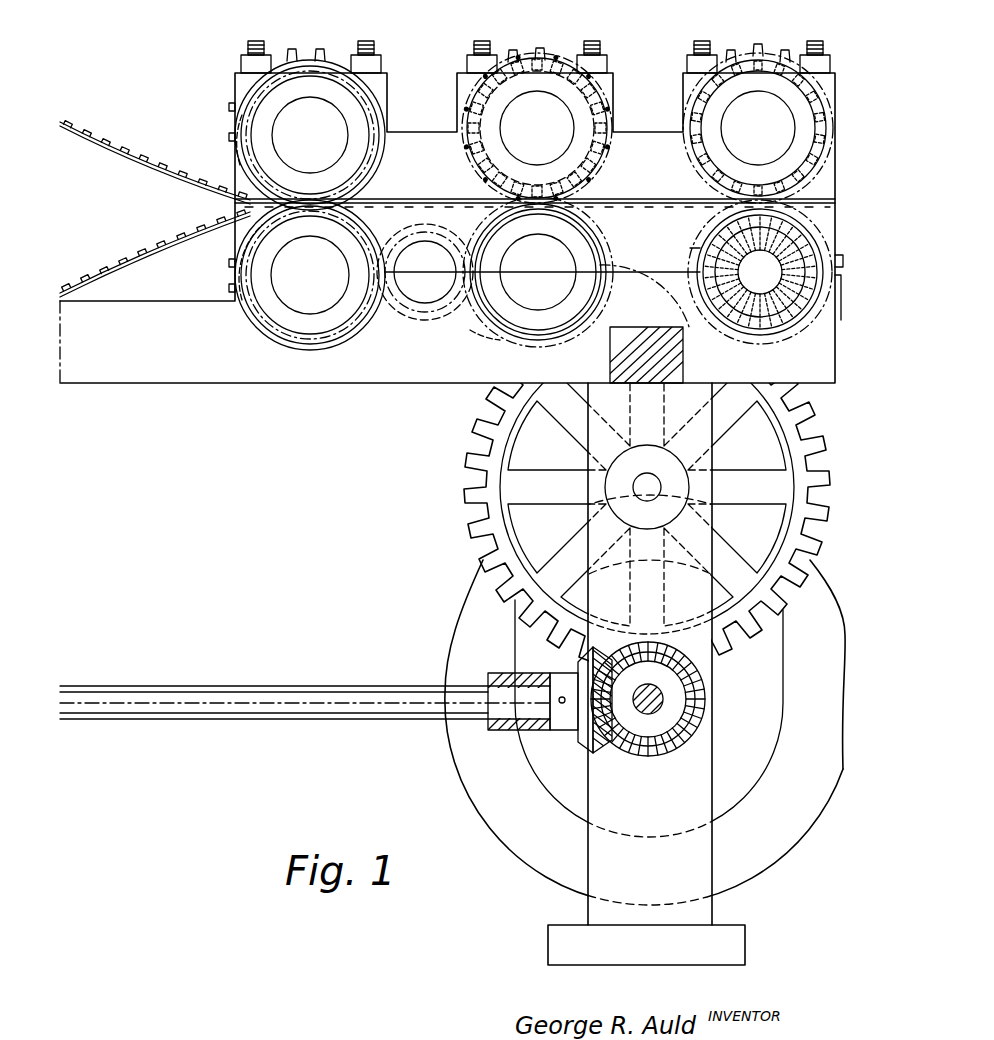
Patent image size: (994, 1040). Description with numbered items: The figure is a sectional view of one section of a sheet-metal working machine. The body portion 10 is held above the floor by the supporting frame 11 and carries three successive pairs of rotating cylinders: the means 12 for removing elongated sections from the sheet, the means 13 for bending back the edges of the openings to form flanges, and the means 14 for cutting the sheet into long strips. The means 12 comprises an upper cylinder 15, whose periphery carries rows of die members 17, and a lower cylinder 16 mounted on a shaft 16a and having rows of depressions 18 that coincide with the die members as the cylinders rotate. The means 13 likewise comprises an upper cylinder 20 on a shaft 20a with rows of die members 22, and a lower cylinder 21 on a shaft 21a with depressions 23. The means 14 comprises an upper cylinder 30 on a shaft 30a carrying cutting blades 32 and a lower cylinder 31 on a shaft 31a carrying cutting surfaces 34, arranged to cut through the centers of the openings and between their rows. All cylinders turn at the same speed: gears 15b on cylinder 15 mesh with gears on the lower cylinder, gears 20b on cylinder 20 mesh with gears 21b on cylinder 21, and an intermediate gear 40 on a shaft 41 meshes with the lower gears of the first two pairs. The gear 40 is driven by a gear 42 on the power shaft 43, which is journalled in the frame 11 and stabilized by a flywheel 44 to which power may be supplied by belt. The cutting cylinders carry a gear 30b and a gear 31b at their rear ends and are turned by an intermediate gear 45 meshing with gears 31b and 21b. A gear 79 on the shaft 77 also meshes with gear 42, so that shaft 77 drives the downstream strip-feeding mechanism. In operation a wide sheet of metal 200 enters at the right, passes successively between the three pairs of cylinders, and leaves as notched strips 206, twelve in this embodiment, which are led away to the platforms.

The body portion 10 is at (276, 372).
The supporting frame 11 is at (595, 955).
The means for removing the elongated sections 12 is at (774, 22).
The means for bending back the edges 13 is at (562, 26).
The means for cutting the sheet into strips 14 is at (330, 26).
The upper cylinder 15 is at (722, 112).
The gears 15b is at (770, 52).
The lower cylinder 16 is at (684, 296).
The shaft 16a is at (742, 104).
The die members 17 is at (752, 55).
The depressions 18 is at (682, 248).
The upper cylinder 20 is at (575, 100).
The shaft 20a is at (548, 110).
The gears 20b is at (545, 56).
The lower cylinder 21 is at (572, 242).
The shaft 21a is at (545, 258).
The gears 21b is at (495, 335).
The die members 22 is at (478, 100).
The depressions 23 is at (637, 228).
The upper cylinder 30 is at (274, 120).
The shaft 30a is at (330, 117).
The gear 30b is at (229, 138).
The lower cylinder 31 is at (270, 258).
The shaft 31a is at (293, 285).
The gear 31b is at (229, 290).
The cutting blades 32 is at (245, 155).
The cutting surfaces 34 is at (262, 238).
The intermediate gear 40 is at (478, 512).
The shaft 41 is at (662, 488).
The gear 42 is at (704, 710).
The shaft 43 is at (650, 716).
The flywheel 44 is at (790, 850).
The intermediate gear 45 is at (418, 300).
The shaft 77 is at (250, 720).
The gear 79 is at (588, 735).
The sheet of metal 200 is at (718, 198).
The strips 206 is at (100, 138).